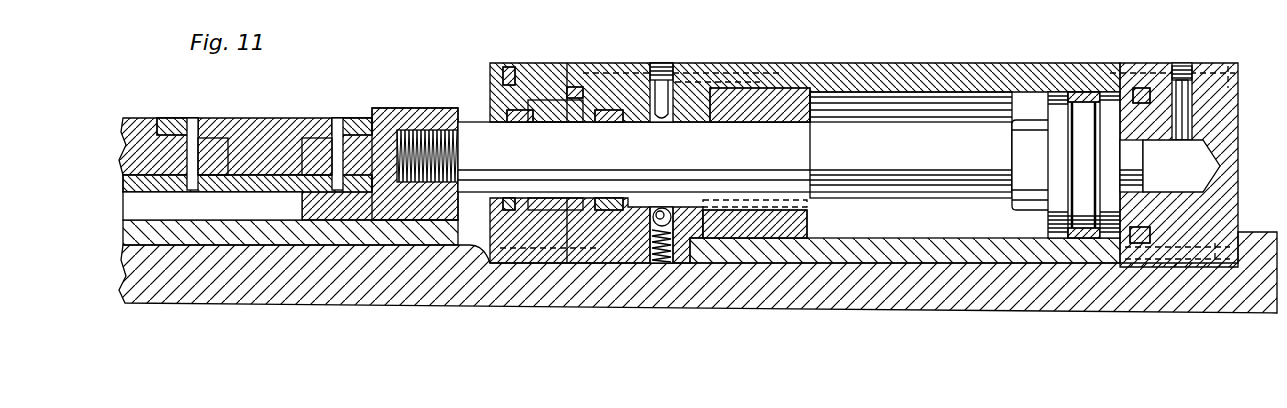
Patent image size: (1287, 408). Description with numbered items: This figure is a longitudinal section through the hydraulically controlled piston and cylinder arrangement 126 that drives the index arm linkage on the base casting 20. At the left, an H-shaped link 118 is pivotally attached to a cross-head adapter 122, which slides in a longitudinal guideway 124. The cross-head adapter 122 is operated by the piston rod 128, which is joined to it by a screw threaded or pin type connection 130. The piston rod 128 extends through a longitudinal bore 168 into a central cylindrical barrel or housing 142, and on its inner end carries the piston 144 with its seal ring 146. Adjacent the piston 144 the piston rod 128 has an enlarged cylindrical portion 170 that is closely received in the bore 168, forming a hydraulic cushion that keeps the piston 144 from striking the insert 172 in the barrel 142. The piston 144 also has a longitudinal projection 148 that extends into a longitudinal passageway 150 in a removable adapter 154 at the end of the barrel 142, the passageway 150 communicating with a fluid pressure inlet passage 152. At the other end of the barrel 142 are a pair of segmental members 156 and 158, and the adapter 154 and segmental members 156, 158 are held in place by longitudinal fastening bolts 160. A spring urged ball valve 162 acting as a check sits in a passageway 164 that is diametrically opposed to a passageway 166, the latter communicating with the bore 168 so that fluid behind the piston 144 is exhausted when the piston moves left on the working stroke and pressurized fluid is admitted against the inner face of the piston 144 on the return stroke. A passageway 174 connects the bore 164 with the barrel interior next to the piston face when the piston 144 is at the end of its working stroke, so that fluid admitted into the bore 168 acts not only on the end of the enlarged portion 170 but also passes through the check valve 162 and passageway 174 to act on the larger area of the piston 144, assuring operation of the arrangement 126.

The base casting 20 is at (1079, 297).
The H-shaped link 118 is at (252, 128).
The cross-head adapter 122 is at (382, 120).
The longitudinal guideway 124 is at (217, 236).
The piston and cylinder arrangement 126 is at (929, 60).
The piston rod 128 is at (475, 138).
The screw threaded connection 130 is at (415, 130).
The cylindrical barrel 142 is at (965, 252).
The piston 144 is at (1058, 103).
The seal ring 146 is at (1087, 92).
The longitudinal projection 148 is at (1137, 162).
The longitudinal passageway 150 is at (1177, 192).
The fluid pressure inlet passage 152 is at (1190, 120).
The removable adapter 154 is at (1227, 210).
The segmental member 156 is at (600, 65).
The segmental member 158 is at (535, 65).
The longitudinal fastening bolts 160 is at (602, 262).
The spring urged ball valve 162 is at (664, 208).
The passageway 164 is at (655, 262).
The passageway 166 is at (663, 63).
The longitudinal bore 168 is at (775, 118).
The enlarged cylindrical portion 170 is at (1027, 140).
The insert 172 is at (747, 100).
The passageway 174 is at (808, 214).